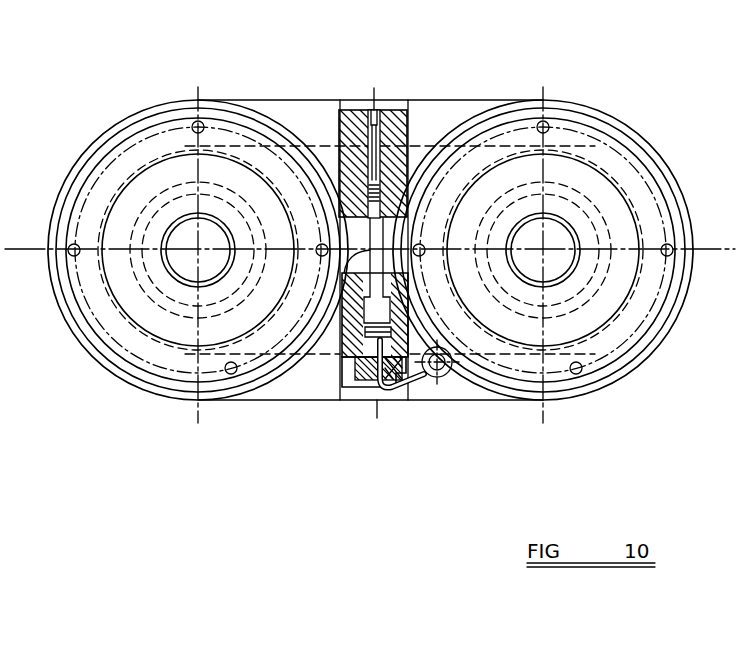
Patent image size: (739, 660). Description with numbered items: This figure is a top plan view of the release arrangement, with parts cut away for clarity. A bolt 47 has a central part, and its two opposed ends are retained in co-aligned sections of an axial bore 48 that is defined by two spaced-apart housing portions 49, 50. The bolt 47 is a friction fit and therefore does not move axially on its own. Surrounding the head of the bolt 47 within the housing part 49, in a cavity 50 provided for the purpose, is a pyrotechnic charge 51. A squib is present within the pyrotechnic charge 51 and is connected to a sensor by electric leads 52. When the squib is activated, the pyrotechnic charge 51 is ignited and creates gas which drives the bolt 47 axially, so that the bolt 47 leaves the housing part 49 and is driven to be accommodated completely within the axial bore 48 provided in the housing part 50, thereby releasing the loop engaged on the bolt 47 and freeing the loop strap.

The bolt 47 is at (335, 321).
The axial bore 48 is at (395, 109).
The housing part 49 is at (341, 385).
The housing part 50 is at (340, 135).
The pyrotechnic charge 51 is at (400, 382).
The electric leads 52 is at (440, 379).